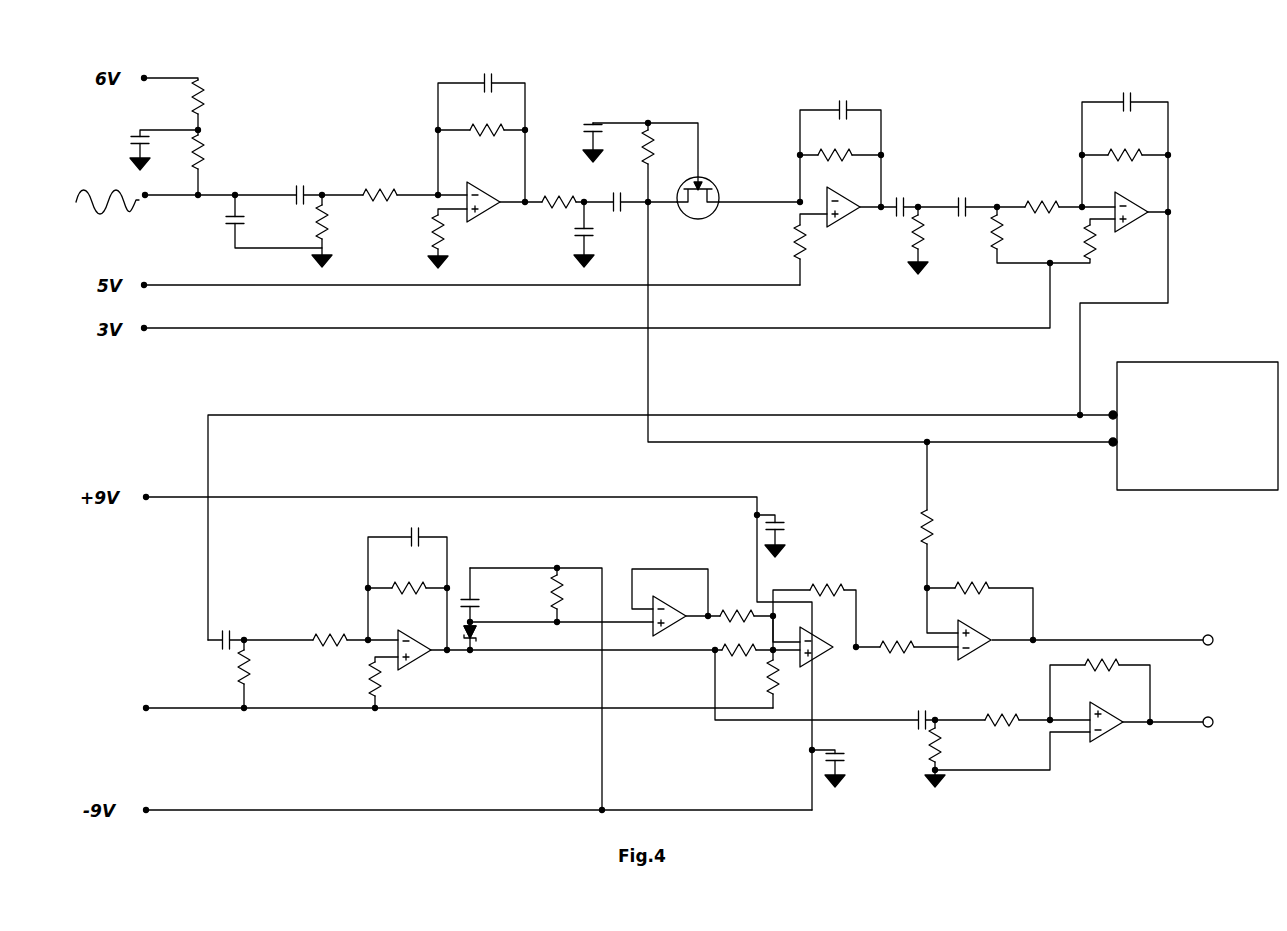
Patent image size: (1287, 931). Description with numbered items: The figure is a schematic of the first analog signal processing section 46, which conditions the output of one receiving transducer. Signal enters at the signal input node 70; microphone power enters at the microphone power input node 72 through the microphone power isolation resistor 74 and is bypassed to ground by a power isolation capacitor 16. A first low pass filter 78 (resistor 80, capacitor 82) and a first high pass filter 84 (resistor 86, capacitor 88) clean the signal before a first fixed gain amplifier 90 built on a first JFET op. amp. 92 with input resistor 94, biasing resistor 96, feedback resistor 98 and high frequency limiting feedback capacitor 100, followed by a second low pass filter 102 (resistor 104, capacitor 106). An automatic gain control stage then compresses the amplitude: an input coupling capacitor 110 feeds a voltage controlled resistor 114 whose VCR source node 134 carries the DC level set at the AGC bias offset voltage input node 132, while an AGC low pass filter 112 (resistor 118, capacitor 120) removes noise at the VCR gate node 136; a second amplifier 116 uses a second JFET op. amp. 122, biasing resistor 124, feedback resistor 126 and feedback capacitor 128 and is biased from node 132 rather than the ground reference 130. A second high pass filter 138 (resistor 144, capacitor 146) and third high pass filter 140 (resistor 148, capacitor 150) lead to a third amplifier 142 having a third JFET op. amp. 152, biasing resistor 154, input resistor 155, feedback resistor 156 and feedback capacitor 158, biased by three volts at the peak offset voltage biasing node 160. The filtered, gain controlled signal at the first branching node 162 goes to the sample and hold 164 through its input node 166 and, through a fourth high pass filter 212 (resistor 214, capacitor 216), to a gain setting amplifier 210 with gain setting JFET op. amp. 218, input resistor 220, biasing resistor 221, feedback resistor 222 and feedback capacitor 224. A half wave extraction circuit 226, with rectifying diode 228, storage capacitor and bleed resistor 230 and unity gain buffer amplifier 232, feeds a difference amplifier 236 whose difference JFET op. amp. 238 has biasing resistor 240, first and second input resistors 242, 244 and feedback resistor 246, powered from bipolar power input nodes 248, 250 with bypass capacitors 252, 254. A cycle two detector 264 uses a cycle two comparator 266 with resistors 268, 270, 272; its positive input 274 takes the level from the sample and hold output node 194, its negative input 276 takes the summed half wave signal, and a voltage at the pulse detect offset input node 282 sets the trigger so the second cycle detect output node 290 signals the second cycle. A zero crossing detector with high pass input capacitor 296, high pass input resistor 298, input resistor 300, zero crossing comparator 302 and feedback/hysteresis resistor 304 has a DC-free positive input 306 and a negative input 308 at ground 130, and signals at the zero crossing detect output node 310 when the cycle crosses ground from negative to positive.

The capacitor 16 is at (140, 150).
The first analog signal processing section 46 is at (345, 126).
The signal input node 70 is at (148, 200).
The microphone power input node 72 is at (146, 75).
The microphone power isolation resistor 74 is at (201, 92).
The first low pass filter 78 is at (235, 173).
The first low pass filter resistor 80 is at (201, 150).
The first low pass filter capacitor 82 is at (230, 224).
The first high pass filter 84 is at (338, 206).
The first high pass filter resistor 86 is at (318, 225).
The first high pass filter capacitor 88 is at (298, 185).
The first fixed gain amplifier 90 is at (410, 160).
The first JFET operational amplifier 92 is at (486, 183).
The first amplifier input resistor 94 is at (375, 188).
The first amplifier biasing resistor 96 is at (441, 232).
The first amplifier feedback resistor 98 is at (484, 116).
The first amplifier high frequency limiting feedback capacitor 100 is at (494, 62).
The second low pass filter 102 is at (572, 216).
The second low pass filter resistor 104 is at (566, 184).
The second low pass filter capacitor 106 is at (590, 238).
The input coupling capacitor 110 is at (616, 192).
The AGC low pass filter 112 is at (607, 120).
The voltage controlled resistor 114 is at (718, 190).
The second amplifier 116 is at (782, 140).
The AGC low pass filter resistor 118 is at (652, 150).
The AGC low pass filter capacitor 120 is at (588, 128).
The second JFET op. amp. 122 is at (848, 220).
The second amplifier biasing resistor 124 is at (803, 250).
The second amplifier feedback resistor 126 is at (848, 138).
The second amplifier high frequency limiting feedback capacitor 128 is at (846, 102).
The ground reference 130 is at (145, 176).
The AGC bias offset voltage input node 132 is at (147, 289).
The VCR source node 134 is at (735, 204).
The VCR gate node 136 is at (698, 160).
The second high pass filter 138 is at (906, 189).
The third high pass filter 140 is at (972, 189).
The third amplifier 142 is at (1063, 157).
The second high pass filter resistor 144 is at (921, 238).
The second high pass filter capacitor 146 is at (898, 220).
The third high pass filter resistor 148 is at (1000, 238).
The third high pass filter capacitor 150 is at (960, 220).
The third JFET op. amp. 152 is at (1134, 226).
The third amplifier biasing resistor 154 is at (1093, 250).
The third amplifier input resistor 155 is at (1048, 186).
The third amplifier feedback resistor 156 is at (1120, 162).
The third amplifier high frequency limiting feedback capacitor 158 is at (1130, 95).
The peak offset voltage biasing node 160 is at (147, 332).
The first branching node 162 is at (1077, 412).
The analog sample and store unit (sample and hold) 164 is at (1216, 436).
The sample and hold input node 166 is at (1110, 420).
The sample and hold output node 194 is at (1110, 447).
The gain setting amplifier 210 is at (350, 590).
The fourth high pass filter 212 is at (232, 625).
The fourth high pass filter resistor 214 is at (247, 666).
The fourth high pass filter capacitor 216 is at (220, 646).
The gain setting JFET op. amp. 218 is at (415, 664).
The gain setting amplifier input resistor 220 is at (325, 632).
The gain setting amplifier biasing resistor 221 is at (372, 680).
The gain setting amplifier feedback resistor 222 is at (420, 576).
The gain setting amplifier high frequency limiting feedback capacitor 224 is at (414, 520).
The half wave extraction circuit 226 is at (512, 565).
The half wave rectifying diode 228 is at (476, 634).
The half wave storage capacitor and bleed resistor 230 is at (560, 580).
The third high impedance unity gain buffer amplifier 232 is at (678, 600).
The difference amplifier 236 is at (870, 621).
The difference JFET op. amp. 238 is at (820, 660).
The difference amplifier biasing resistor 240 is at (770, 672).
The difference amplifier first input resistor 242 is at (736, 598).
The difference amplifier second input resistor 244 is at (739, 634).
The difference amplifier feedback resistor 246 is at (826, 582).
The first bipolar power input node 248 is at (148, 494).
The second bipolar power input node 250 is at (148, 807).
The first bipolar power bypass capacitor 252 is at (780, 520).
The second bipolar power bypass capacitor 254 is at (854, 746).
The cycle two detector 264 is at (1048, 579).
The cycle two comparator 266 is at (980, 652).
The cycle two feedback resistor 268 is at (930, 520).
The resistor 270 is at (890, 640).
The resistor 272 is at (975, 582).
The non-inverting input 274 is at (946, 630).
The cycle two comparator negative input 276 is at (950, 652).
The pulse detect offset input node 282 is at (148, 705).
The second cycle detect output node 290 is at (1205, 634).
The zero crossing high pass input capacitor 296 is at (917, 712).
The zero crossing high pass input resistor 298 is at (938, 745).
The zero crossing input resistor 300 is at (995, 712).
The zero crossing comparator 302 is at (1110, 736).
The zero crossing comparator feedback/hysteresis resistor 304 is at (1106, 648).
The zero crossing comparator positive input 306 is at (1090, 714).
The zero crossing comparator negative input 308 is at (1090, 730).
The zero crossing detect output node 310 is at (1205, 716).